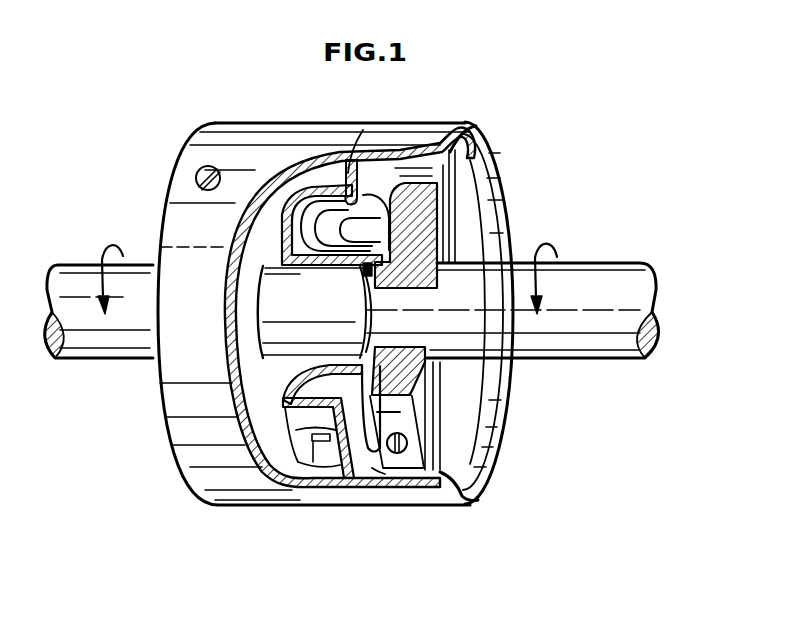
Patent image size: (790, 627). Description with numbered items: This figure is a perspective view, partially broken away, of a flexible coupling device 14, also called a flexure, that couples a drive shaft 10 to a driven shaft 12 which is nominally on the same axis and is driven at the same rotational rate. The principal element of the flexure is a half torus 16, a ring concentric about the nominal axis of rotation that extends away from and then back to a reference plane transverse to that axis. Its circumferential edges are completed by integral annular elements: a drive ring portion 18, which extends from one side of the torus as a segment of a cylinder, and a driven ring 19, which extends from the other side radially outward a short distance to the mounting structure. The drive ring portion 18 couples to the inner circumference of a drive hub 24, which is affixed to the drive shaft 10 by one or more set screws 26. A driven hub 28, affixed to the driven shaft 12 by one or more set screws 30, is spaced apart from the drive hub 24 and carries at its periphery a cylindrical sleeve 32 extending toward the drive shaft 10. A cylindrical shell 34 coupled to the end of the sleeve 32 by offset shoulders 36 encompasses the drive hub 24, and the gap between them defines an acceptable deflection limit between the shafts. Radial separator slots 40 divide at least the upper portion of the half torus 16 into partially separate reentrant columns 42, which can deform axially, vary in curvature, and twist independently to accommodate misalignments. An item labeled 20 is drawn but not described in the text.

The drive shaft 10 is at (612, 262).
The driven shaft 12 is at (83, 280).
The flexible coupling device 14 is at (239, 442).
The half torus 16 is at (289, 393).
The drive ring portion 18 is at (342, 272).
The driven ring 19 is at (380, 470).
The seal 20 is at (335, 165).
The drive hub 24 is at (470, 212).
The set screws 26 is at (410, 443).
The driven hub 28 is at (246, 287).
The set screws 30 is at (200, 174).
The cylindrical sleeve 32 is at (330, 505).
The cylindrical shell 34 is at (405, 128).
The offset shoulders 36 is at (364, 470).
The radial separator slots 40 is at (313, 440).
The reentrant columns 42 is at (293, 424).